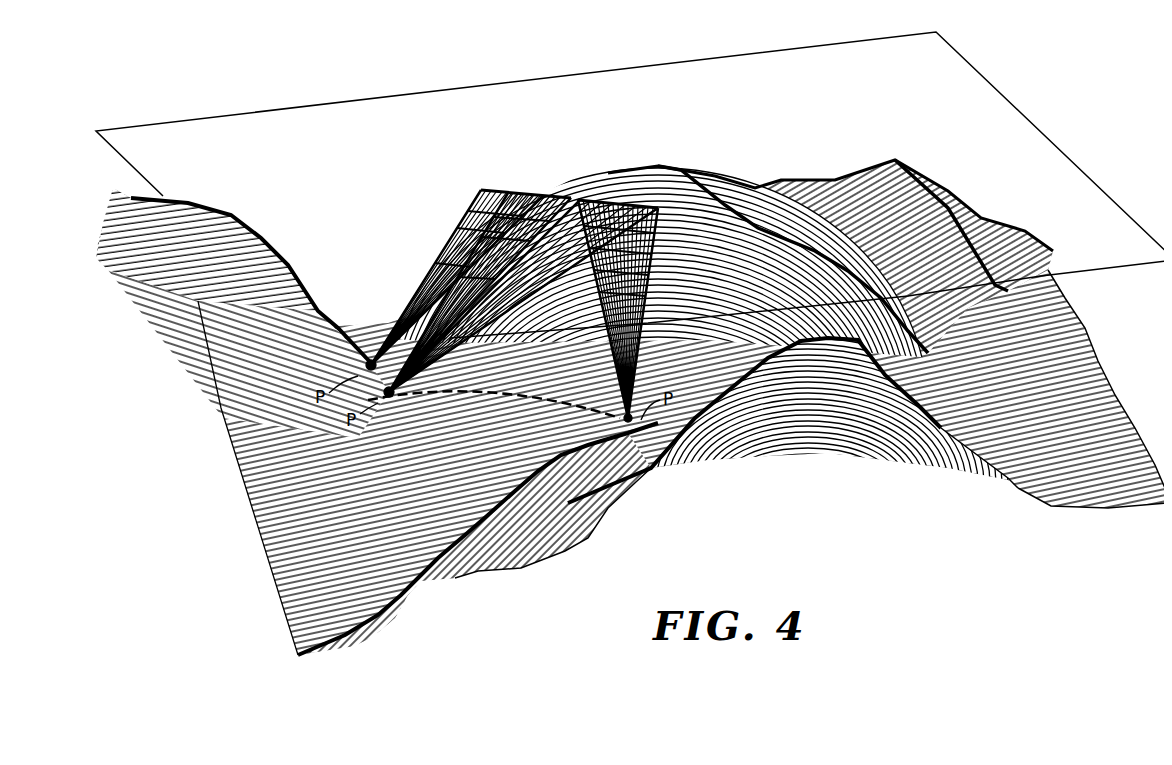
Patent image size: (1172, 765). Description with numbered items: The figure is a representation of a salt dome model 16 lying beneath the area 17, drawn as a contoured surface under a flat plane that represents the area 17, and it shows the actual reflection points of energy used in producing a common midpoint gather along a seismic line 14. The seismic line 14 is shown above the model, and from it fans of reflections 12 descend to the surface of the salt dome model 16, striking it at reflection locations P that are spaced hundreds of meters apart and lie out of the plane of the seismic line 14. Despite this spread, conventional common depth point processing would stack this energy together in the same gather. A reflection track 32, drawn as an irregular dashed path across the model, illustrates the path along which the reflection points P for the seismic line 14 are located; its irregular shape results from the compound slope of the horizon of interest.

The reflections 12 is at (447, 315).
The seismic line 14 is at (517, 183).
The salt dome model 16 is at (733, 129).
The area 17 is at (1038, 127).
The reflection track 32 is at (493, 392).